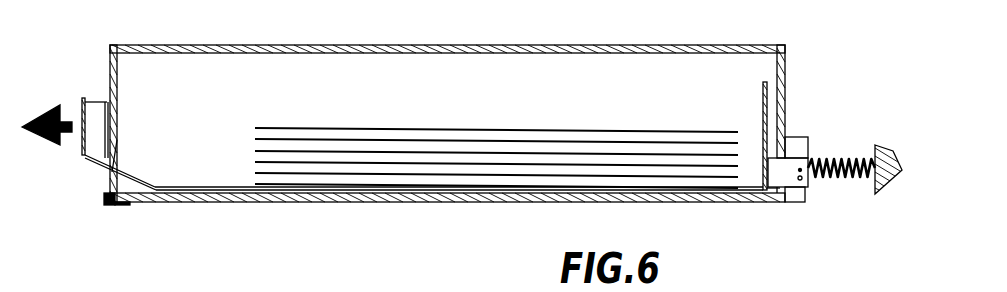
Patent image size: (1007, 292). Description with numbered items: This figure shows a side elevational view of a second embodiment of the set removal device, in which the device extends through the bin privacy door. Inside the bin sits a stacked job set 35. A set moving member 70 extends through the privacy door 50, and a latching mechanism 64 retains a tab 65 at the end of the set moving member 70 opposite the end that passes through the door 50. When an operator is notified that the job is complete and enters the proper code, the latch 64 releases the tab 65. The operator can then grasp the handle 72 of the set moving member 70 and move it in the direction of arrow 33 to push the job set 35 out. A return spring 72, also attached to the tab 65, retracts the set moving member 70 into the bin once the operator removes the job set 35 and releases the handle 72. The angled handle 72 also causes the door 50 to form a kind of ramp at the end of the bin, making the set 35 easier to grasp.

The arrow 33 is at (48, 138).
The job set 35 is at (628, 142).
The privacy door 50 is at (113, 70).
The latching mechanism 64 is at (800, 142).
The tab 65 is at (787, 175).
The set moving member 70 is at (98, 160).
The handle / return spring 72 is at (825, 177).